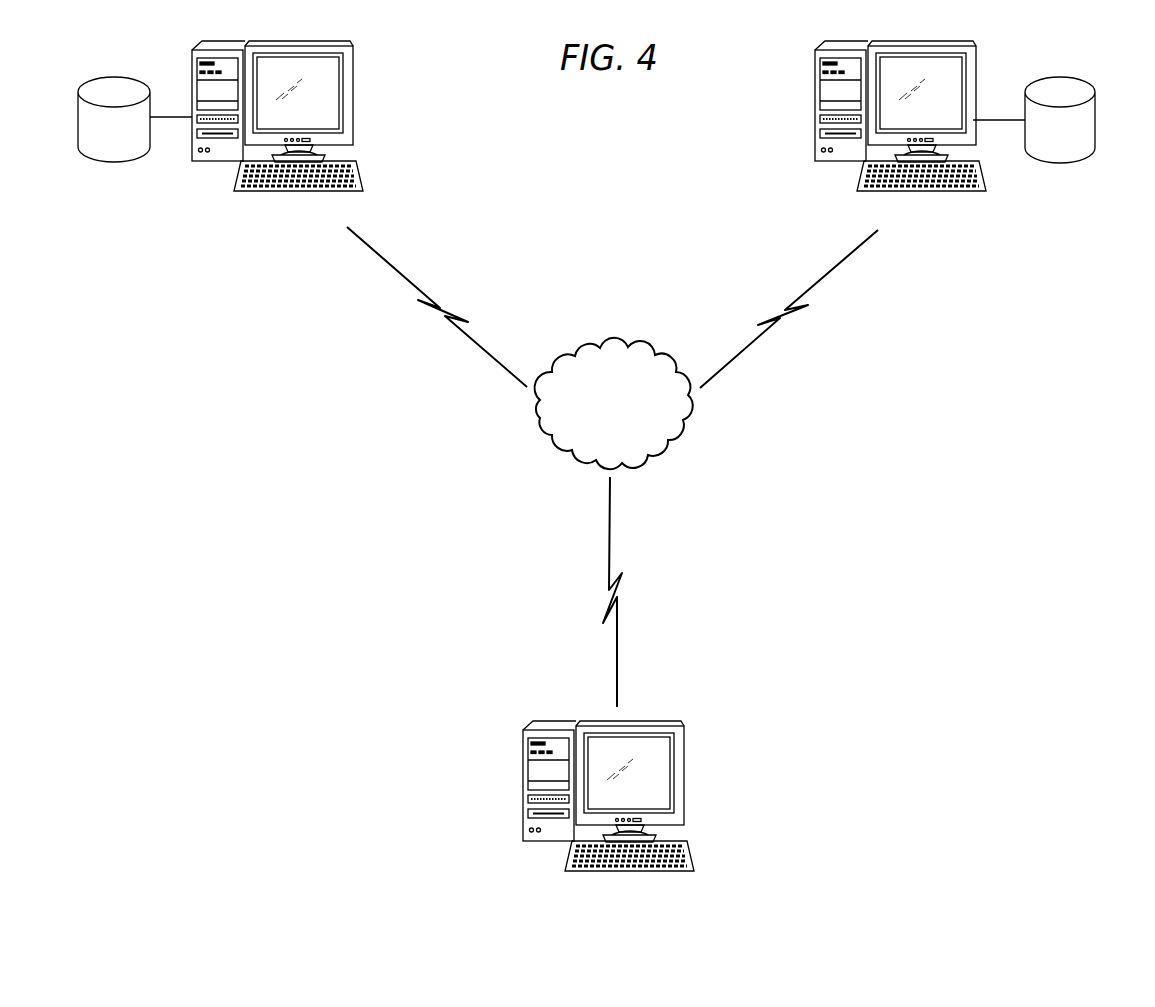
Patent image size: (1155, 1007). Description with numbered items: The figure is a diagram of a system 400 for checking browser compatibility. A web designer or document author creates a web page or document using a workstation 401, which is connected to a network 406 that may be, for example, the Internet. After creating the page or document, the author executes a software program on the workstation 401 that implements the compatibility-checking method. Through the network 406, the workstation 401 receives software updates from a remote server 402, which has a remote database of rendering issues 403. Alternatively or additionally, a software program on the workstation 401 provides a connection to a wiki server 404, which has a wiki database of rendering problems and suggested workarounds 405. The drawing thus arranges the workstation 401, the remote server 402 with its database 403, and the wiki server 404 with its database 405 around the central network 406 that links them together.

The system 400 is at (327, 568).
The workstation 401 is at (637, 722).
The remote server 402 is at (302, 42).
The remote database of rendering issues 403 is at (117, 160).
The wiki server 404 is at (917, 42).
The wiki database of rendering problems and suggested workarounds 405 is at (1057, 165).
The network 406 is at (610, 343).